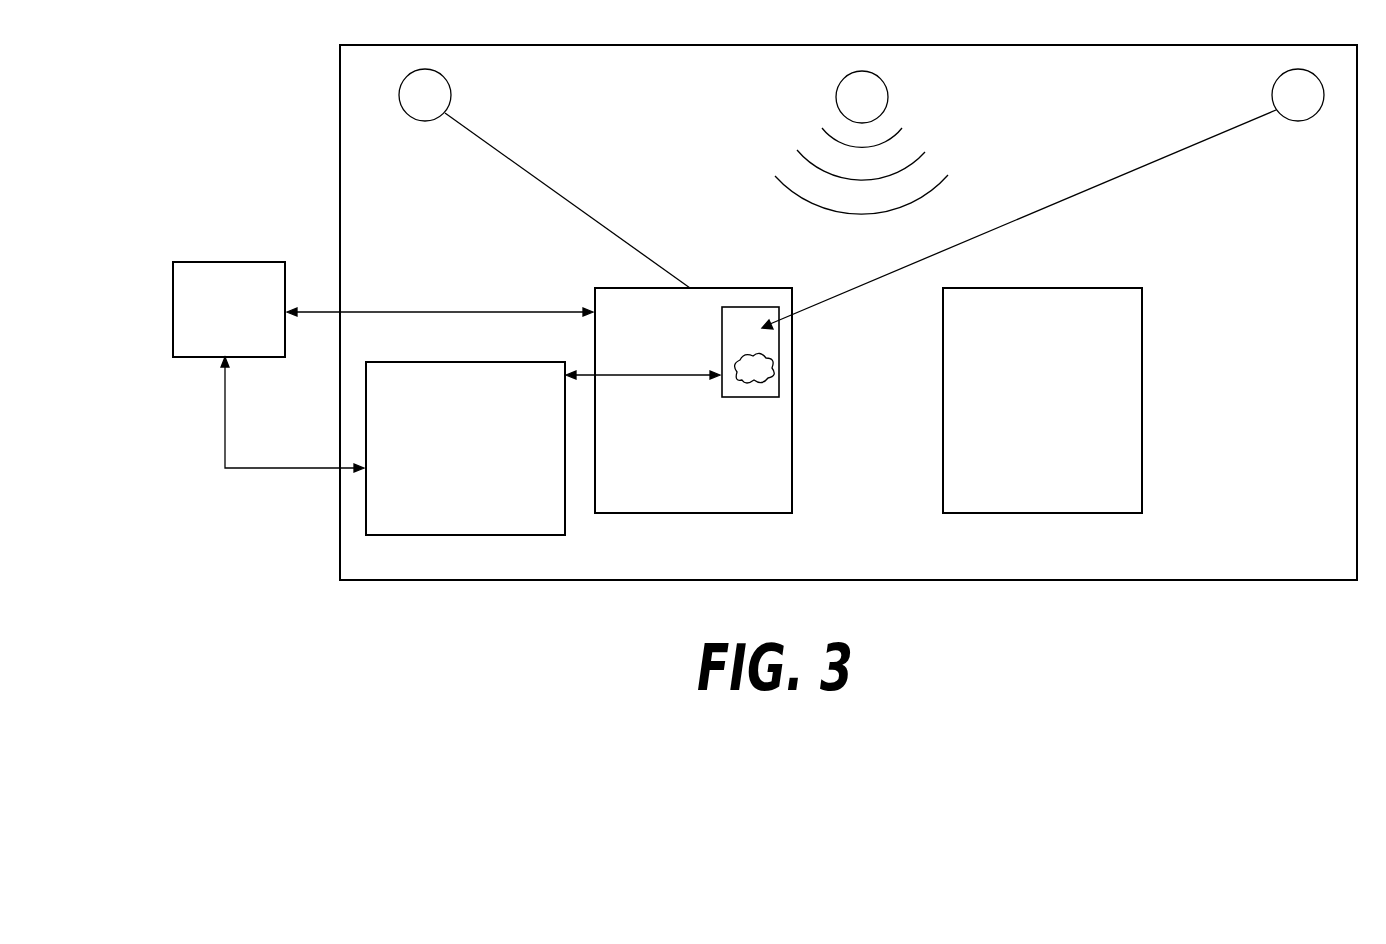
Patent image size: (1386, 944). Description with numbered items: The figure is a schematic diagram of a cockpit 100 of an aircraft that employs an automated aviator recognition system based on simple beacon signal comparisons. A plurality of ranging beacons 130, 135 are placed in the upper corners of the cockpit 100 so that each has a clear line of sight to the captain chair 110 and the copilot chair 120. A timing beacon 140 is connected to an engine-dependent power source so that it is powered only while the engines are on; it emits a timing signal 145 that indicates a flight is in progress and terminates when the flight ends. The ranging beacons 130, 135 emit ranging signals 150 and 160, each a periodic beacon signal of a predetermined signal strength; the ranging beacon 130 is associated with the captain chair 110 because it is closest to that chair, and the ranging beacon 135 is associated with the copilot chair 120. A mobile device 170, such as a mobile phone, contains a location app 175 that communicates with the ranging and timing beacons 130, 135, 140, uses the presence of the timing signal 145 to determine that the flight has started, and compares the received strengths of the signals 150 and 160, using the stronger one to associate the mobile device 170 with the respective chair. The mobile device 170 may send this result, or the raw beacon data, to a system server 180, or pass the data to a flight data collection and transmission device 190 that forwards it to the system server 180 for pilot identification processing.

The cockpit 100 is at (818, 45).
The captain chair 110 is at (792, 393).
The copilot chair 120 is at (1143, 385).
The ranging beacon 130 is at (428, 121).
The ranging beacon 135 is at (1296, 121).
The timing beacon 140 is at (836, 97).
The timing signal 145 is at (840, 185).
The ranging signal 150 is at (615, 232).
The ranging signal 160 is at (988, 232).
The mobile device 170 is at (757, 307).
The location app 175 is at (730, 380).
The system server 180 is at (232, 262).
The flight data collection and transmission device 190 is at (465, 362).